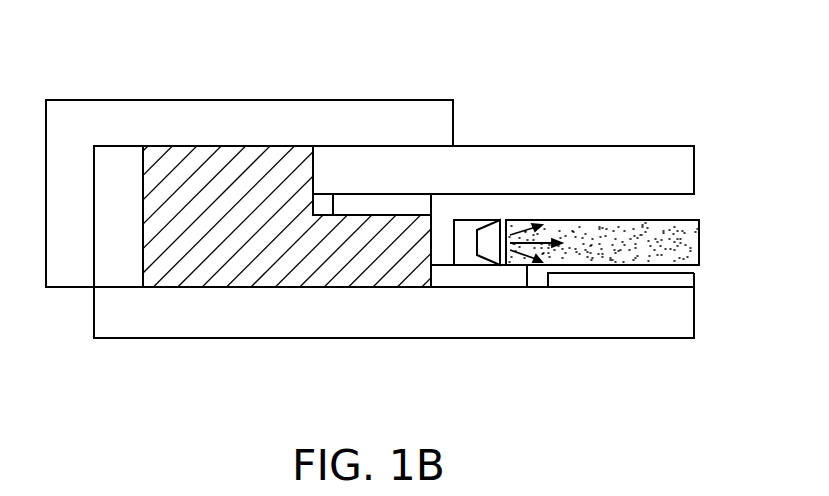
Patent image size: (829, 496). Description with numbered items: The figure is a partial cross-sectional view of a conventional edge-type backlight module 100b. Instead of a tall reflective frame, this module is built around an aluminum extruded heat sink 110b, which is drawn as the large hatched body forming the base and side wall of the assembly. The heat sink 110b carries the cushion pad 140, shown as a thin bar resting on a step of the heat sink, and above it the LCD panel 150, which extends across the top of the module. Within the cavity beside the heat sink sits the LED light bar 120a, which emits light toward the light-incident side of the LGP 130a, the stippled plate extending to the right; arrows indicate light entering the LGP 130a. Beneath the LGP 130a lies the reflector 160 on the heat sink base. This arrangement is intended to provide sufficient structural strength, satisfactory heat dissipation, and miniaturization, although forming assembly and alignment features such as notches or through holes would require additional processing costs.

The edge-type backlight module 100b is at (545, 249).
The aluminum extruded heat sink 110b is at (175, 263).
The LED light bar 120a is at (467, 257).
The LGP 130a is at (628, 252).
The cushion pad 140 is at (423, 205).
The LCD panel 150 is at (653, 157).
The reflector 160 is at (577, 282).